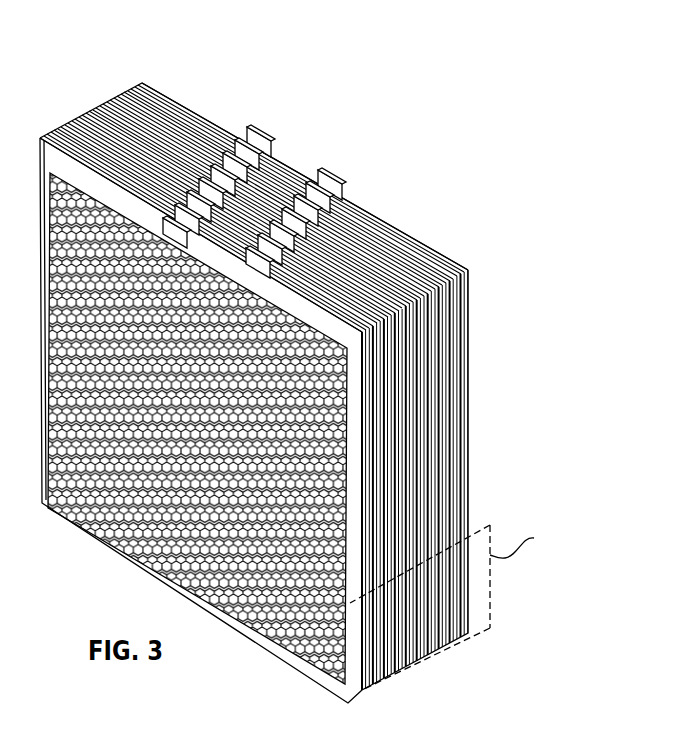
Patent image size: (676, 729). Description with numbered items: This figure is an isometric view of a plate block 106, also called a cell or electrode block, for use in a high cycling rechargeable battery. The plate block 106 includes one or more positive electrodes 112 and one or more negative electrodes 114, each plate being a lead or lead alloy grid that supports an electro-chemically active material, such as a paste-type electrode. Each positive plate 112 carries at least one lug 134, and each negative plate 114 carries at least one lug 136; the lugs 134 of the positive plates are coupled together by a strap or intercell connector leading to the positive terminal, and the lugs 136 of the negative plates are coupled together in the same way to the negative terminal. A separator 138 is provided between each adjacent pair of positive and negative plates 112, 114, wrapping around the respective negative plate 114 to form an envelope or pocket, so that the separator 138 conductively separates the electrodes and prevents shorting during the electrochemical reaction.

The plate block 106 is at (308, 374).
The positive electrode 112 is at (377, 212).
The negative electrode 114 is at (408, 232).
The lug 134 is at (334, 178).
The lug 136 is at (268, 128).
The separator 138 is at (367, 427).